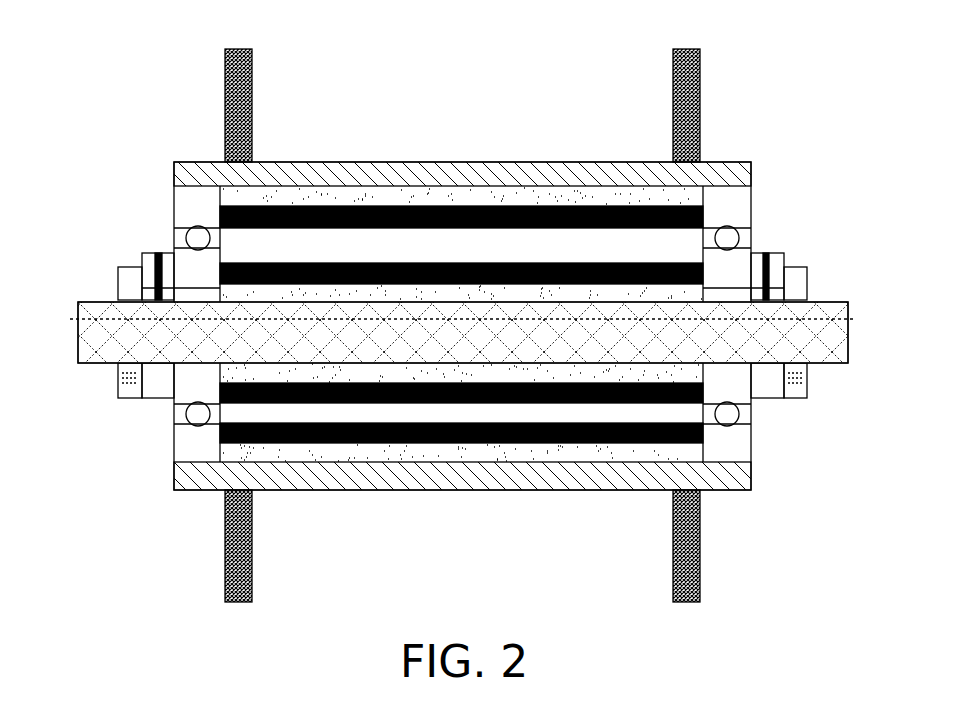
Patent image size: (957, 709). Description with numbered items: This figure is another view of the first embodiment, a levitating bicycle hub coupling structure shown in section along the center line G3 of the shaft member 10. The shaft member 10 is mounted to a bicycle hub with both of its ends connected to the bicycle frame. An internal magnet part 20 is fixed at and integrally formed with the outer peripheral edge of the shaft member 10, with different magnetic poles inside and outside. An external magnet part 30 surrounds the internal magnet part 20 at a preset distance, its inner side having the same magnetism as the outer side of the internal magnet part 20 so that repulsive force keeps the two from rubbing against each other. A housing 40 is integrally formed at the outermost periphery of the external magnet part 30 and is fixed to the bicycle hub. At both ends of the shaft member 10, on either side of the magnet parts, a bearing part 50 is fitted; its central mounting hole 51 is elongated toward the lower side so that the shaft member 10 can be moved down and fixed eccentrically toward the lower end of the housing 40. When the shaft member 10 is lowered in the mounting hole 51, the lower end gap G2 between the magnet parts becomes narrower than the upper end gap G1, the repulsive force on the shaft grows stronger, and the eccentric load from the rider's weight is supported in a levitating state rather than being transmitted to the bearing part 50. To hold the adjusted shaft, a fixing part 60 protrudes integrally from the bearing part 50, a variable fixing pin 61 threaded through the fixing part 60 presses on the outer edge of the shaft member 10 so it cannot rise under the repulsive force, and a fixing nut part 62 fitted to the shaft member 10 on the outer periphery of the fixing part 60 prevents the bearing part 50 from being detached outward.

The shaft member 10 is at (842, 343).
The internal magnet part 20 is at (592, 407).
The external magnet part 30 is at (554, 447).
The housing 40 is at (379, 464).
The bearing part 50 is at (197, 200).
The mounting hole 51 is at (207, 300).
The fixing part 60 is at (151, 399).
The variable fixing pin 61 is at (156, 256).
The fixing nut part 62 is at (118, 383).
The upper end gap G1 is at (495, 240).
The lower end gap G2 is at (457, 410).
The center line G3 is at (78, 302).